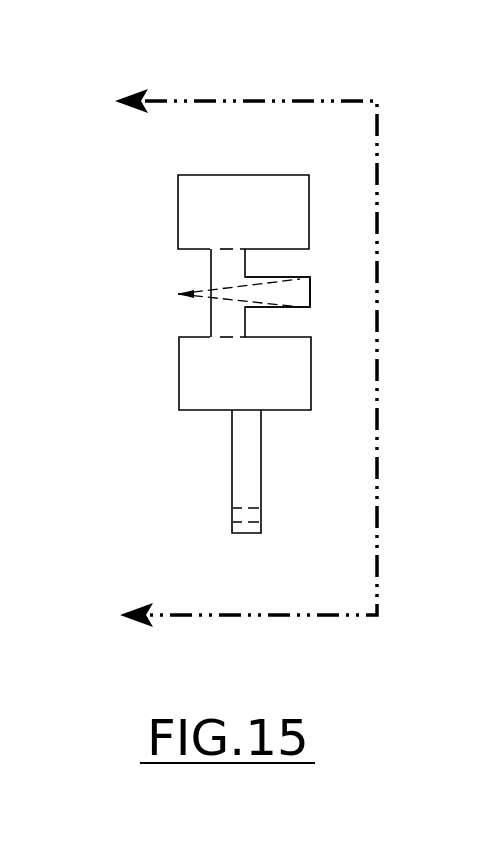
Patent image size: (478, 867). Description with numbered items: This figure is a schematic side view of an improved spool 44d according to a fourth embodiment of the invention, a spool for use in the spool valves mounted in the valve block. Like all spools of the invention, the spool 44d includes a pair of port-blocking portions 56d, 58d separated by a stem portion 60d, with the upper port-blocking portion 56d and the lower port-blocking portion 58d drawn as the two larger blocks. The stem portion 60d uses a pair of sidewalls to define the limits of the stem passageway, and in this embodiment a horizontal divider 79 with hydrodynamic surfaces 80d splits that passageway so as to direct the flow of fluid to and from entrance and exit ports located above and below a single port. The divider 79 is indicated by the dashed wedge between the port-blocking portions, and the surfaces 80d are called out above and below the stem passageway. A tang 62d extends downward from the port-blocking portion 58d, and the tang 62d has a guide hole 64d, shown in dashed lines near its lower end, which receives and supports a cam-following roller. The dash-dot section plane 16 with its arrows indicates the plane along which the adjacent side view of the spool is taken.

The plane 16— 16 is at (227, 358).
The spool 44d is at (153, 216).
The port-blocking portion 56d is at (268, 188).
The hydrodynamic surfaces 80d is at (298, 277).
The stem portion 60d is at (287, 288).
The horizontal divider 79 is at (205, 296).
The port-blocking portion 58d is at (208, 362).
The tang 62d is at (237, 455).
The guide hole 64d is at (232, 515).